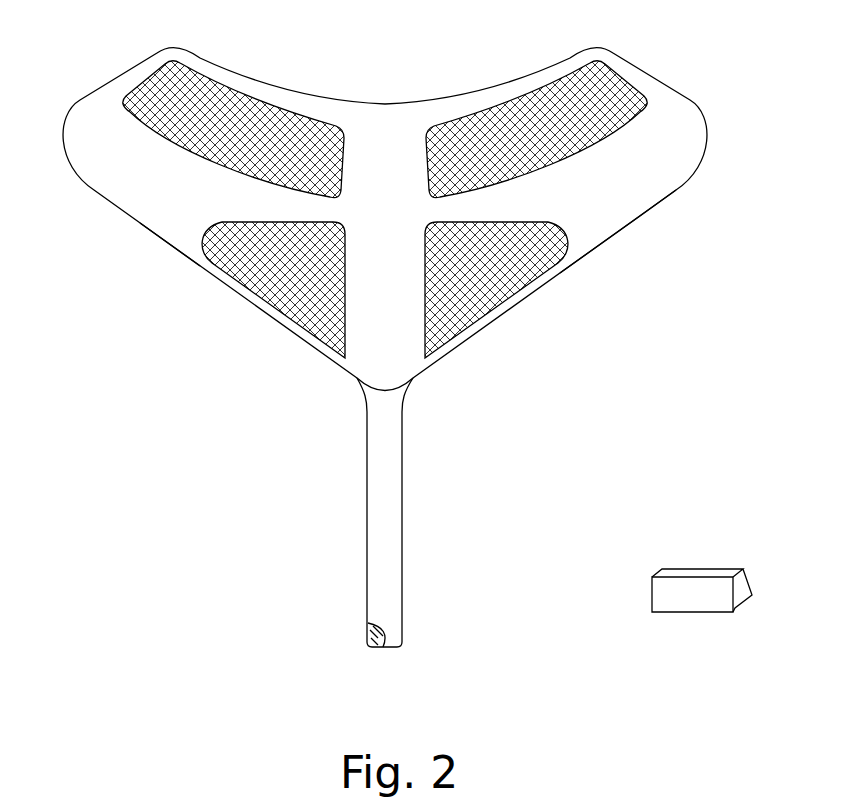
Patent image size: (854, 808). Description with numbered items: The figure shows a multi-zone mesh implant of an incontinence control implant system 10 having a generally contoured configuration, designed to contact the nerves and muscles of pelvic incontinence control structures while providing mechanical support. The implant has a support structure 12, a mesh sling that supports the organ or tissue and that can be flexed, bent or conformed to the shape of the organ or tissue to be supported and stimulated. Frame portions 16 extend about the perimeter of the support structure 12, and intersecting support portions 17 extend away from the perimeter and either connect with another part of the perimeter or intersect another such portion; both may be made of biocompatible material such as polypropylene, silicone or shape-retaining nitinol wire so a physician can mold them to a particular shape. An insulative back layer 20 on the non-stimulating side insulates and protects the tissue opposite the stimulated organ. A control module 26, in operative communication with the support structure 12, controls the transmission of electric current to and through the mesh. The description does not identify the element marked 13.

The incontinence control implant system 10 is at (690, 171).
The support structure 12 is at (240, 117).
The fastener 13 is at (372, 643).
The frame portions 16 is at (600, 236).
The intersecting support portions 17 is at (255, 203).
The insulative back layer 20 is at (650, 213).
The control module 26 is at (716, 569).